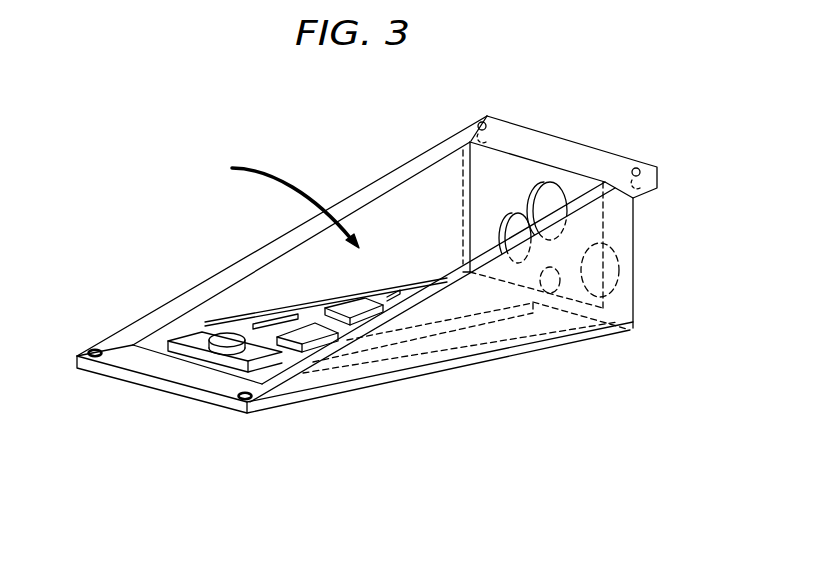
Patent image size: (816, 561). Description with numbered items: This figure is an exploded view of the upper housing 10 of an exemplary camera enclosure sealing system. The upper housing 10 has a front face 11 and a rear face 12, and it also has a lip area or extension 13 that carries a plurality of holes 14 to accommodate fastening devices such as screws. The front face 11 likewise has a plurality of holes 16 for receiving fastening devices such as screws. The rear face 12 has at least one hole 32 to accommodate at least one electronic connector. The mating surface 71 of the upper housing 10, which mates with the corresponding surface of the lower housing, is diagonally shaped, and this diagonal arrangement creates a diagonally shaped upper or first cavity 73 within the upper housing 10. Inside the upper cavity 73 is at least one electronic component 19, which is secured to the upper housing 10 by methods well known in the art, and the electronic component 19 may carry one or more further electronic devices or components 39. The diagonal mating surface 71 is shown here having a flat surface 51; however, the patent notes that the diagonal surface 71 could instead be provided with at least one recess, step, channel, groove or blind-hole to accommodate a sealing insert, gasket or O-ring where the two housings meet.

The upper housing 10 is at (385, 172).
The front face 11 is at (77, 362).
The rear face 12 is at (636, 296).
The lip area or extension 13 is at (562, 138).
The holes 14 is at (490, 121).
The holes 16 is at (90, 350).
The electronic component 19 is at (480, 303).
The hole 32 is at (562, 188).
The electronic devices or components 39 is at (256, 326).
The flat surface 51 is at (295, 236).
The mating surface 71 is at (243, 268).
The upper cavity 73 is at (281, 204).